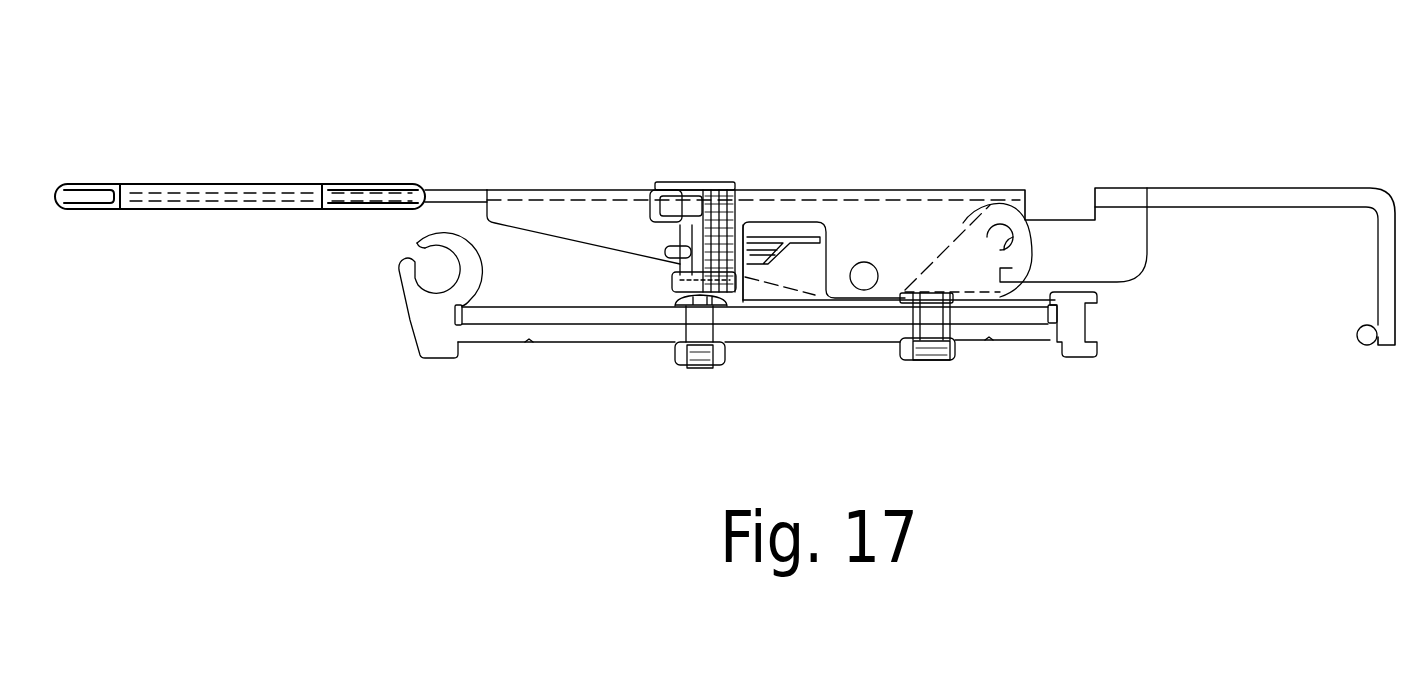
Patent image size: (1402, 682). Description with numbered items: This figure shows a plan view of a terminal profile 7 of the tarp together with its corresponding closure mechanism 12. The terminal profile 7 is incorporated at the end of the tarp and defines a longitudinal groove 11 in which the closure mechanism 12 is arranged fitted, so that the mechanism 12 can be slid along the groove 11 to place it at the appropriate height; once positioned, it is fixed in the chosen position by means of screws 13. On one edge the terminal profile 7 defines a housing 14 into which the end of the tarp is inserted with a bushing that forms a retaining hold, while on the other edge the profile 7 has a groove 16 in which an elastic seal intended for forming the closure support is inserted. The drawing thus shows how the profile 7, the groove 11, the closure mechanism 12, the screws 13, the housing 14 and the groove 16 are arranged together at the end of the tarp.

The terminal profile 7 is at (530, 332).
The longitudinal groove 11 is at (1000, 323).
The closure mechanism 12 is at (893, 210).
The screws 13 is at (905, 352).
The housing 14 is at (440, 268).
The groove 16 is at (1088, 323).